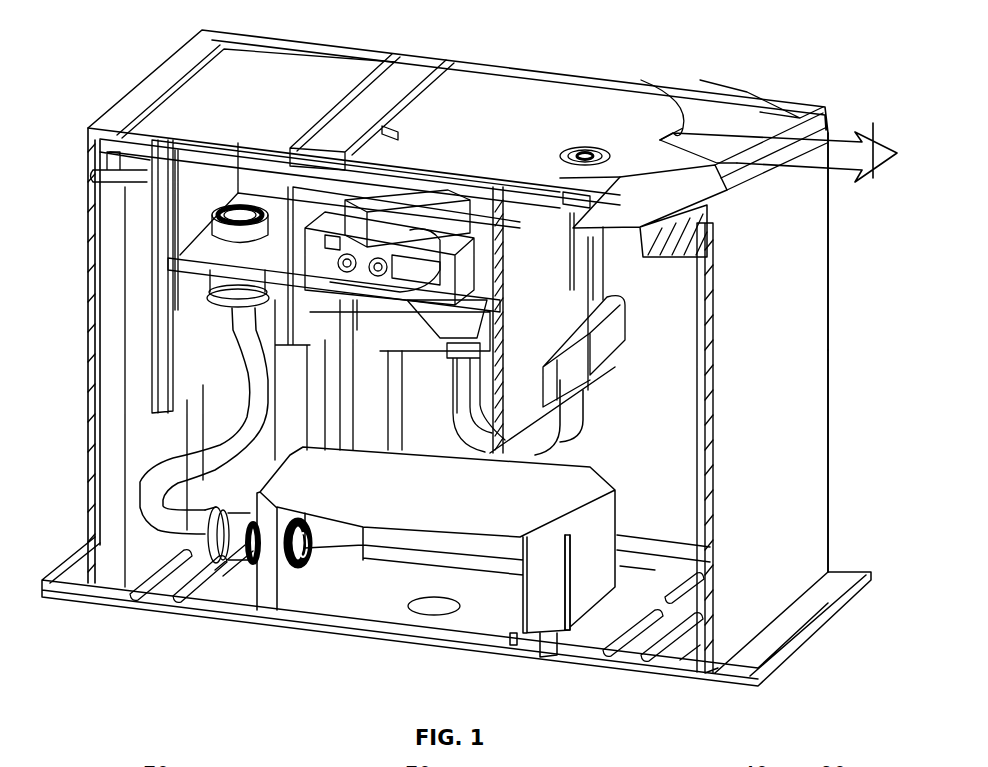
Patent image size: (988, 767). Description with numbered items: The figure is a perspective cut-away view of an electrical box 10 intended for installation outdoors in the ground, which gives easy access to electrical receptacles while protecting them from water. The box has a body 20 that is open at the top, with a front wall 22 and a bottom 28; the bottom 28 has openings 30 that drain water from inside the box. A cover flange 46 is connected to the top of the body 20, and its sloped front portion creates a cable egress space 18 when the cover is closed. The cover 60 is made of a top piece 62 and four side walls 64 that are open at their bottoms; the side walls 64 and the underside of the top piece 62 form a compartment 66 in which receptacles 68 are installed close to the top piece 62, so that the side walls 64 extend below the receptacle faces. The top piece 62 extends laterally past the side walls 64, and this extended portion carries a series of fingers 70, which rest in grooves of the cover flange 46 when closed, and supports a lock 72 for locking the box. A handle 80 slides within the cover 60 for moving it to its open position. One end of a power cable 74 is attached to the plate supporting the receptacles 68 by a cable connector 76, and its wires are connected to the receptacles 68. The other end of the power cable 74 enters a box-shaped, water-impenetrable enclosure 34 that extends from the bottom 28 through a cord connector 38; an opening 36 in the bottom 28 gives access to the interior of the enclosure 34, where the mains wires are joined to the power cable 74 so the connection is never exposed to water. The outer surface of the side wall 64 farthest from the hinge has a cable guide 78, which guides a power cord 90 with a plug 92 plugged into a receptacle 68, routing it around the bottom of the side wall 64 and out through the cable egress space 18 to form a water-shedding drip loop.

The electrical box 10 is at (752, 34).
The cable egress space 18 is at (641, 80).
The body 20 is at (811, 295).
The front wall 22 is at (811, 435).
The bottom 28 is at (642, 667).
The openings 30 is at (688, 663).
The enclosure 34 is at (577, 583).
The opening 36 is at (433, 608).
The cord connector 38 is at (230, 568).
The cover flange 46 is at (768, 170).
The cover 60 is at (520, 90).
The top piece 62 is at (287, 57).
The side walls 64 is at (523, 372).
The compartment 66 is at (357, 322).
The receptacles 68 is at (415, 298).
The fingers 70 is at (758, 118).
The lock 72 is at (582, 152).
The power cable 74 is at (240, 353).
The cable connector 76 is at (213, 293).
The cable guide 78 is at (603, 347).
The handle 80 is at (410, 78).
The power cord 90 is at (848, 132).
The plug 92 is at (493, 307).